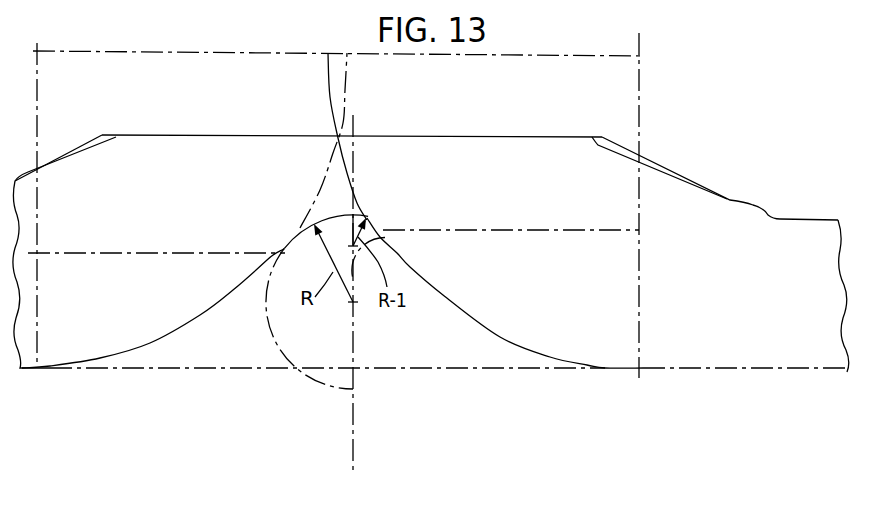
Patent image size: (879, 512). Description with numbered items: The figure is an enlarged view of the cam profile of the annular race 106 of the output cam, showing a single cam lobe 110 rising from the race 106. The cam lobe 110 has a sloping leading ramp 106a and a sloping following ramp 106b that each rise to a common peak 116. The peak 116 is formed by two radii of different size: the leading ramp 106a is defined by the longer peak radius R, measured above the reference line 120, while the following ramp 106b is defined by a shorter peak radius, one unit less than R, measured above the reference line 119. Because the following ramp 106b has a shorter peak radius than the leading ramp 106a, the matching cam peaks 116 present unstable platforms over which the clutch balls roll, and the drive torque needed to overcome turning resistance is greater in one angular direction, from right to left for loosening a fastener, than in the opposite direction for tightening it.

The annular race 106 is at (658, 365).
The leading ramp 106a is at (243, 283).
The following ramp 106b is at (443, 295).
The cam lobe 110 is at (279, 205).
The peak 116 is at (353, 215).
The reference line 119 is at (460, 230).
The reference line 120 is at (70, 253).